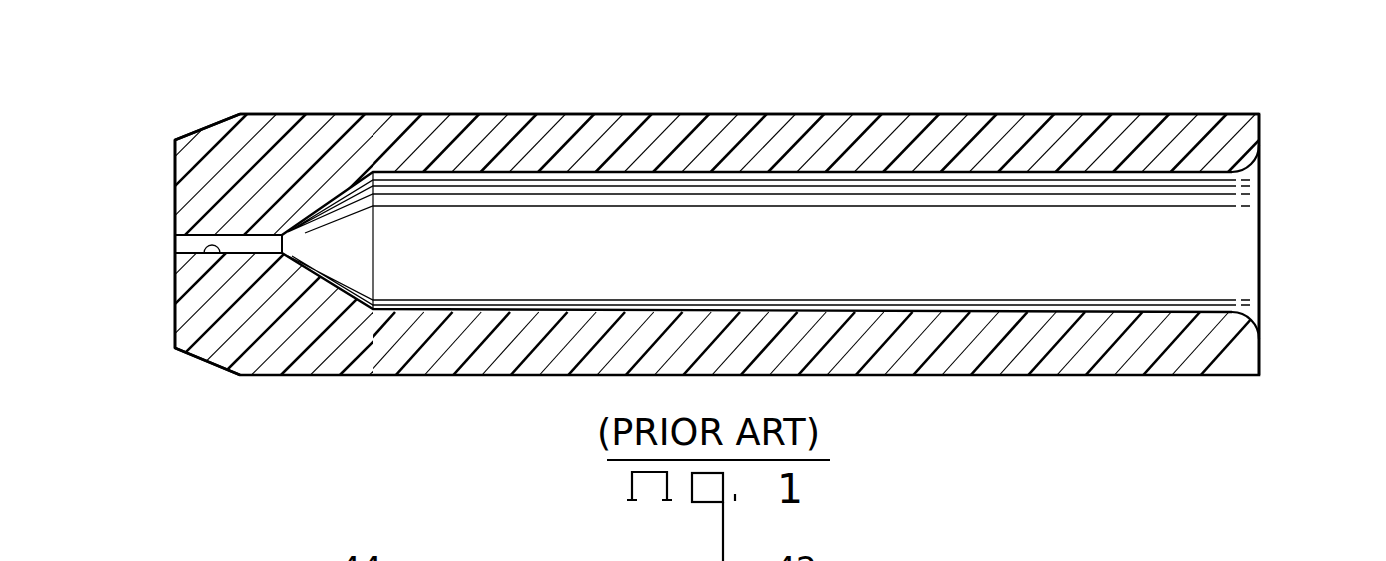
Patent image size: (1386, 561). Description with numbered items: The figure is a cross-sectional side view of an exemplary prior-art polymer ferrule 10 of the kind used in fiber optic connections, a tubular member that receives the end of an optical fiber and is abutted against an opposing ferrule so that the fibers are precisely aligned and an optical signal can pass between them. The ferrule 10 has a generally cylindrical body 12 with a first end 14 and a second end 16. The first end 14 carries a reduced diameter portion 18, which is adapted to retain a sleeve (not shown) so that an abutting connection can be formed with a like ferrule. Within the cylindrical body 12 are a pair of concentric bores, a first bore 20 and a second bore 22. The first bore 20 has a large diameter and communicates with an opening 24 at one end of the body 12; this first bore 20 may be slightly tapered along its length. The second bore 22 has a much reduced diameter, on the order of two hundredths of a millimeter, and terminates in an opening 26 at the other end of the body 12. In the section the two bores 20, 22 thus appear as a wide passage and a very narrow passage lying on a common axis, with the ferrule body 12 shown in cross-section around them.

The ferrule 10 is at (1026, 99).
The cylindrical body 12 is at (657, 114).
The first end 14 is at (173, 163).
The second end 16 is at (1260, 139).
The reduced diameter portion 18 is at (178, 349).
The first bore 20 is at (730, 173).
The second bore 22 is at (173, 278).
The opening 24 is at (1252, 315).
The opening 26 is at (180, 238).